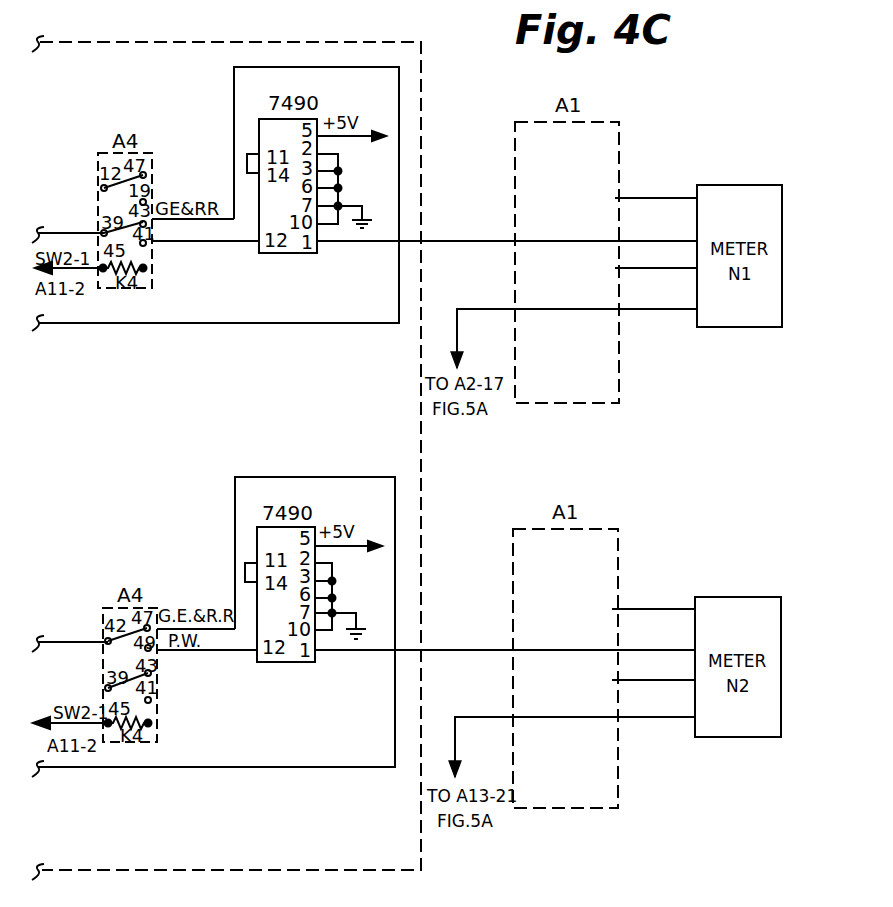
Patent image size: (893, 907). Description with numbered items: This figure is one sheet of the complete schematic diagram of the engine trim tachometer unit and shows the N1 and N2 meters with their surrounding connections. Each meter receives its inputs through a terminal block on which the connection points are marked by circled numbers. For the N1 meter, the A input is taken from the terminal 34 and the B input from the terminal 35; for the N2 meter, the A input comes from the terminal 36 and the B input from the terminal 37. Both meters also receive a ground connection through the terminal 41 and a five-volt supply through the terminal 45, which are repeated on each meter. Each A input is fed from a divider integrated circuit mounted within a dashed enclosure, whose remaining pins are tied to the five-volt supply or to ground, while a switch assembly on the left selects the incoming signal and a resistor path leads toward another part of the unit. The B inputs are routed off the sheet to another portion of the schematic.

The A input terminal of meter N1 (pin 34 of A1) 34 is at (604, 226).
The B input terminal of meter N1 (pin 35 of A1) 35 is at (574, 322).
The A input terminal of meter N2 (pin 36 of A1) 36 is at (605, 632).
The B input terminal of meter N2 (pin 37 of A1) 37 is at (572, 728).
The ground terminal (pin 41 of A1) 41 is at (639, 466).
The +5V supply terminal (pin 45 of A1) 45 is at (639, 396).